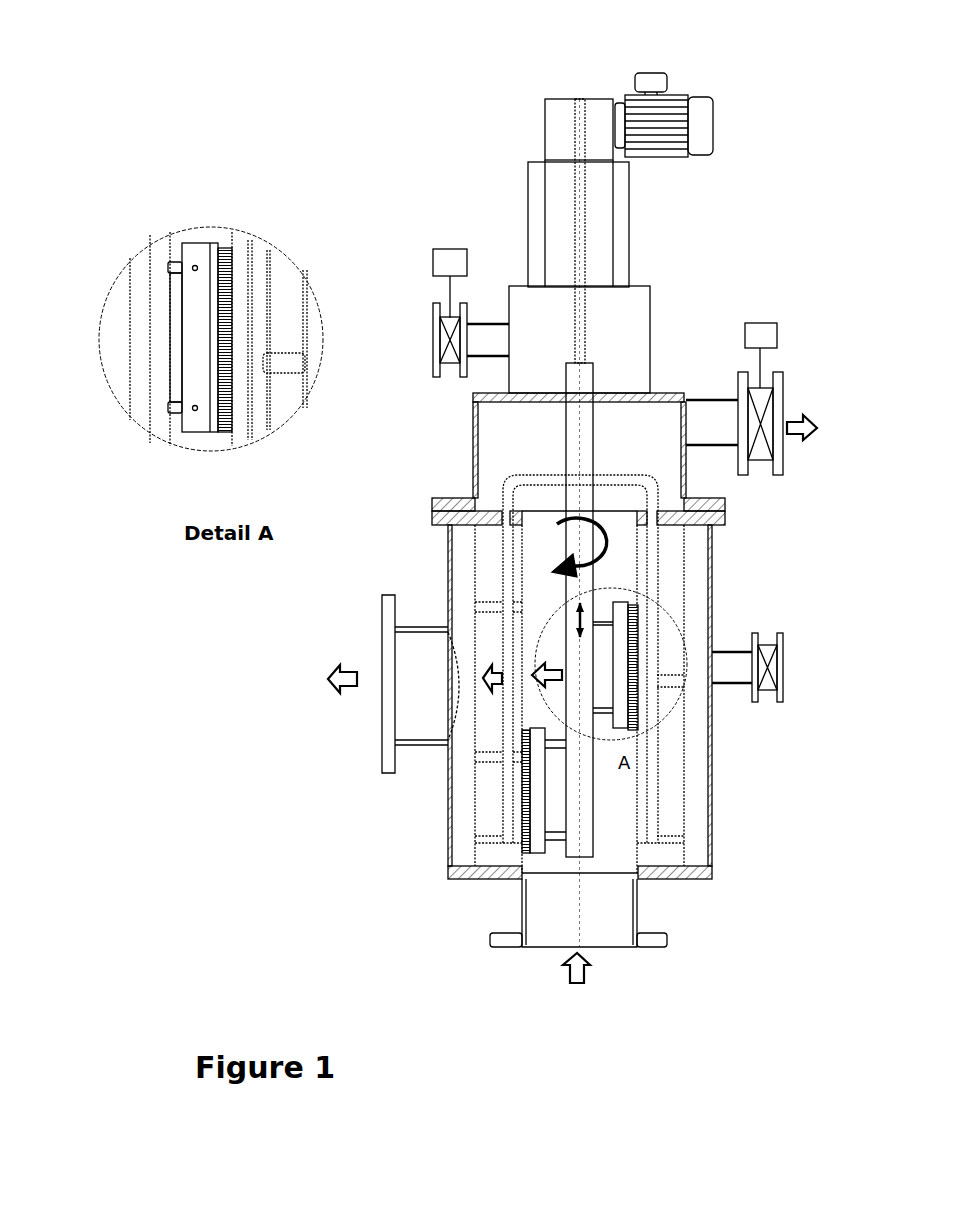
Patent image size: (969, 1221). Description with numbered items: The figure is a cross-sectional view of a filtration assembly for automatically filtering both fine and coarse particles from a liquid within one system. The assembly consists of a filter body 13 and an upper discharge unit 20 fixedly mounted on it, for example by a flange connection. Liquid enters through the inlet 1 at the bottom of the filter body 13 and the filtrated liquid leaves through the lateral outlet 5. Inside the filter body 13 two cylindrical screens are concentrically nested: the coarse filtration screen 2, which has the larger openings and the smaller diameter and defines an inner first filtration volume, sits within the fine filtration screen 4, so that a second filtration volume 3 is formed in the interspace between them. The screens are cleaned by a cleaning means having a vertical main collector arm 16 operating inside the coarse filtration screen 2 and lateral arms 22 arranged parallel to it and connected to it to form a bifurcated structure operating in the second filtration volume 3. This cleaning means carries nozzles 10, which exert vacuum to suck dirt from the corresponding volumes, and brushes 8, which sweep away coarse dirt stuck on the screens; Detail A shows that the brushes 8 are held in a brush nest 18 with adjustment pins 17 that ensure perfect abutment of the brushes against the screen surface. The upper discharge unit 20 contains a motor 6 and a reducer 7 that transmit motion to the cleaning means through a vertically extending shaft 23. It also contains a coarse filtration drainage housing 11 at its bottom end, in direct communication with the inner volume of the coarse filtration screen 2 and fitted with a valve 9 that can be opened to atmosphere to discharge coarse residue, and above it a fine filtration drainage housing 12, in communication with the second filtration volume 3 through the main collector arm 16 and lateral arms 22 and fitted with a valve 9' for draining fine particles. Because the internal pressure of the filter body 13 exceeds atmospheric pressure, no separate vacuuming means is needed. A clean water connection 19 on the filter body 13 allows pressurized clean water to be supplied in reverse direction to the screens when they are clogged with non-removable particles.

The inlet 1 is at (605, 928).
The coarse filtration screen 2 is at (518, 595).
The second filtration volume 3 is at (487, 797).
The fine filtration screen 4 is at (473, 594).
The outlet 5 is at (403, 711).
The motor 6 is at (705, 100).
The reducer 7 is at (570, 99).
The brushes 8 is at (522, 823).
The valve 9 is at (765, 399).
The valve 9' is at (451, 313).
The nozzles 10 is at (673, 830).
The coarse filtration drainage housing 11 is at (500, 456).
The fine filtration drainage housing 12 is at (612, 320).
The filter body 13 is at (645, 682).
The main collector arm 16 is at (578, 452).
The adjustment pins 17 is at (173, 262).
The brush nest 18 is at (190, 253).
The clean water connection 19 is at (725, 652).
The upper discharge unit 20 is at (784, 148).
The lateral arms 22 is at (653, 767).
The shaft 23 is at (580, 188).